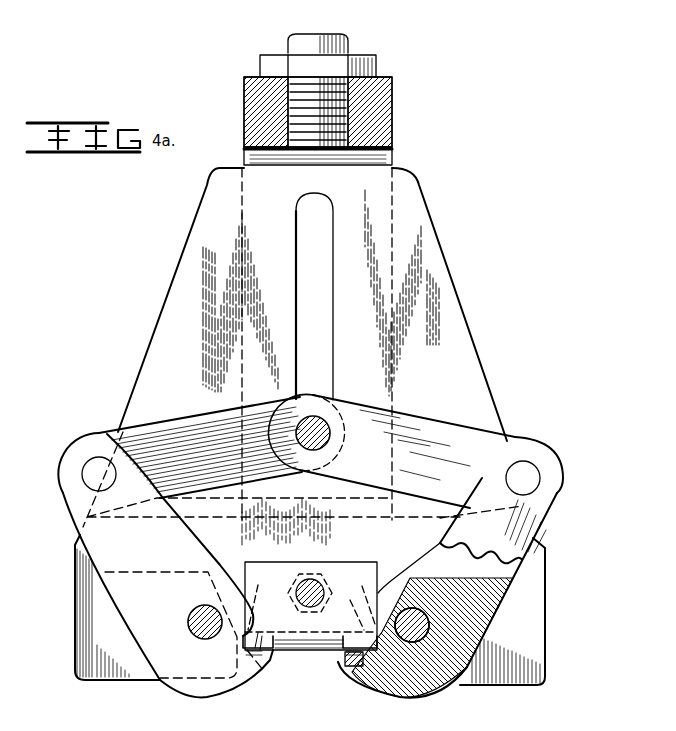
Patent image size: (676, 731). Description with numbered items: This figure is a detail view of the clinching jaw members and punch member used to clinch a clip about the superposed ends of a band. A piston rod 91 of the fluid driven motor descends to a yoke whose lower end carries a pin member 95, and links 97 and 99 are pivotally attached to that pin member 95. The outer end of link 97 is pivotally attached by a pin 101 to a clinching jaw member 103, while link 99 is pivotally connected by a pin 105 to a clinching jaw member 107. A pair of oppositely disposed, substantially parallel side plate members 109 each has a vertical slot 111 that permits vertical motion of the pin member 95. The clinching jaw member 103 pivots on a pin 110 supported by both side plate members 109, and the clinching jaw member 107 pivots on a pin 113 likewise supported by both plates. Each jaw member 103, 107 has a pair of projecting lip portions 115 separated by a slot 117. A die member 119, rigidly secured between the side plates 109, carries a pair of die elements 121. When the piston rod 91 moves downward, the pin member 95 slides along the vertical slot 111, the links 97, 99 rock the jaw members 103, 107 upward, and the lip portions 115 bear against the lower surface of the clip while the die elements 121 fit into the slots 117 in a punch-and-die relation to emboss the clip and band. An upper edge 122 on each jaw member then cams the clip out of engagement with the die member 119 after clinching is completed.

The piston rod 91 is at (352, 50).
The pin member 95 is at (331, 440).
The link 97 is at (433, 418).
The link 99 is at (203, 414).
The pin 101 is at (540, 476).
The clinching jaw member 103 is at (545, 548).
The pin 105 is at (85, 472).
The clinching jaw member 107 is at (118, 610).
The side plate member 109 is at (142, 377).
The pin 110 is at (440, 628).
The vertical slot 111 is at (336, 300).
The pin 113 is at (189, 627).
The lip portion 115 is at (343, 664).
The slot 117 is at (372, 670).
The die member 119 is at (329, 562).
The die element 121 is at (340, 638).
The upper edge 122 is at (357, 612).